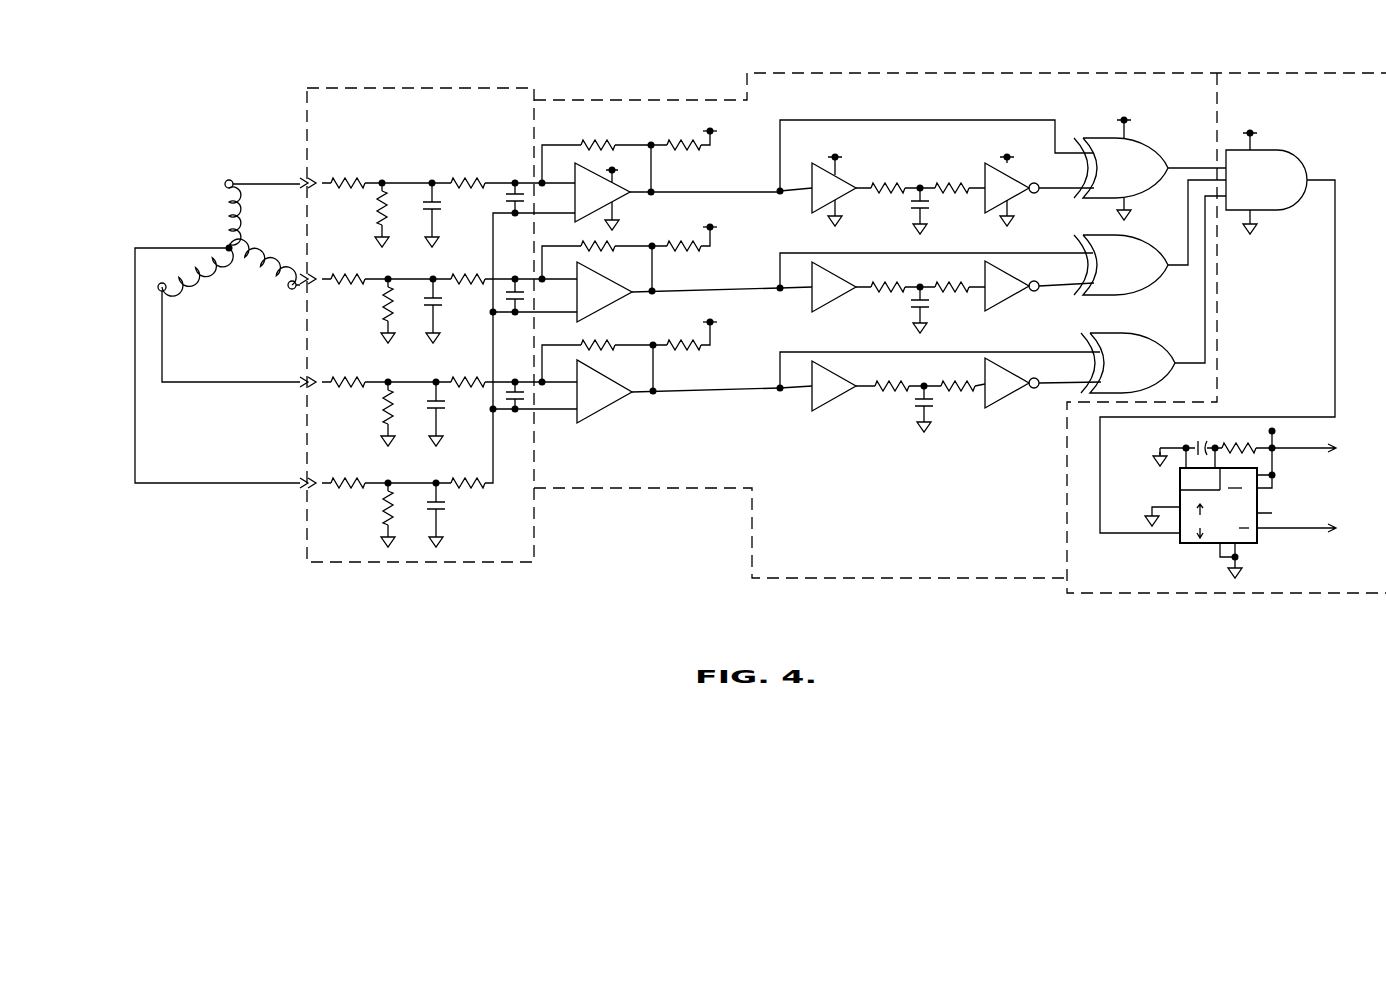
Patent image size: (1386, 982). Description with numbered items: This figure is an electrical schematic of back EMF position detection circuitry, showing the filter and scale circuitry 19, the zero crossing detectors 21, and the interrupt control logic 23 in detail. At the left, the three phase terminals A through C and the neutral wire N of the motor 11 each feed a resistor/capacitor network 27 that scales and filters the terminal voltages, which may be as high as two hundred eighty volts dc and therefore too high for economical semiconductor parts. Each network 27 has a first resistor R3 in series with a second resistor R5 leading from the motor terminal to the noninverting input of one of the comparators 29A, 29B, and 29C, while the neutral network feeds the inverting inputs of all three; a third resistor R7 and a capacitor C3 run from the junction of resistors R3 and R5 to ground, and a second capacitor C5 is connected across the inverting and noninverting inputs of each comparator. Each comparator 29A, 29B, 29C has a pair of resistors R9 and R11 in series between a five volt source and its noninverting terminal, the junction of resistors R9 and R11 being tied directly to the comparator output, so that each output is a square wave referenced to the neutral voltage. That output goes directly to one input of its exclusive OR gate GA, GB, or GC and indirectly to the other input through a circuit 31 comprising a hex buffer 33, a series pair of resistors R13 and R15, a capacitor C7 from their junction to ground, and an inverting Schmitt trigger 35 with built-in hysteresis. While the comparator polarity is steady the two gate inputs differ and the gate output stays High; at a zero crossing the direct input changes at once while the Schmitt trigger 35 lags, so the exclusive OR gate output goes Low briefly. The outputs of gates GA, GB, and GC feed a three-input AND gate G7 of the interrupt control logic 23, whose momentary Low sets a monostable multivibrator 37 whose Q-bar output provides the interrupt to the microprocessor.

The motor 11 is at (208, 223).
The filter and scale circuitry 19 is at (405, 88).
The zero crossing detectors 21 is at (627, 100).
The interrupt control logic 23 is at (1280, 72).
The resistor/capacitor network 27 is at (352, 209).
The comparator 29A is at (626, 200).
The comparator 29B is at (621, 302).
The comparator 29C is at (616, 408).
The circuit 31 is at (798, 200).
The hex buffer 33 is at (839, 211).
The Schmitt trigger 35 is at (1026, 196).
The monostable multivibrator 37 is at (1180, 486).
The first resistor R3 is at (352, 180).
The second resistor R5 is at (474, 180).
The third resistor R7 is at (402, 364).
The capacitor C3 is at (458, 364).
The second capacitor C5 is at (508, 199).
The resistor R9 is at (610, 146).
The resistor R11 is at (694, 146).
The resistor R13 is at (920, 177).
The resistor R15 is at (970, 175).
The capacitor C7 is at (926, 210).
The exclusive OR gate GA is at (1143, 138).
The exclusive OR gate GB is at (1128, 236).
The exclusive OR gate GC is at (1135, 334).
The AND gate G7 is at (1282, 150).